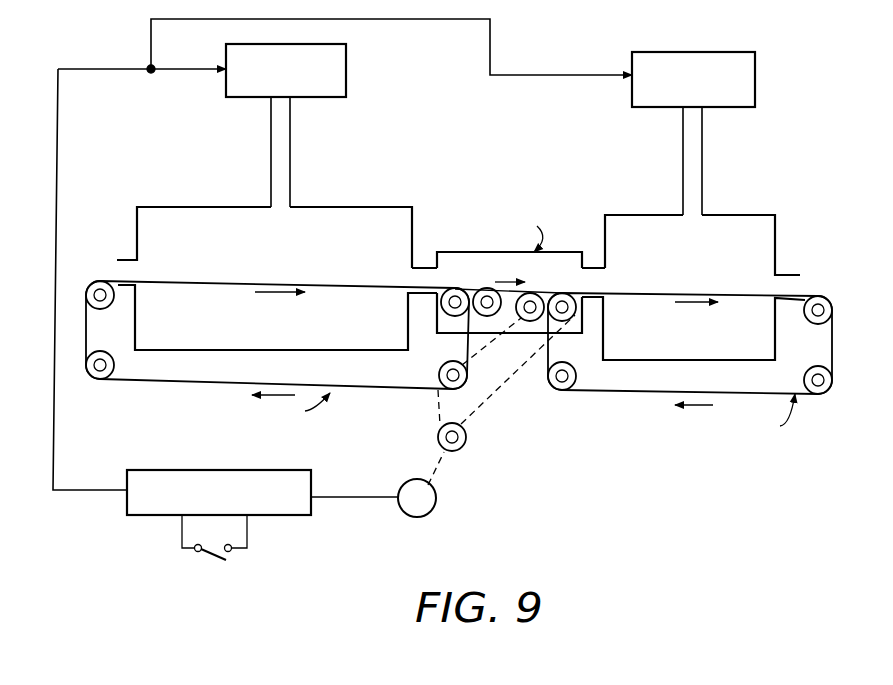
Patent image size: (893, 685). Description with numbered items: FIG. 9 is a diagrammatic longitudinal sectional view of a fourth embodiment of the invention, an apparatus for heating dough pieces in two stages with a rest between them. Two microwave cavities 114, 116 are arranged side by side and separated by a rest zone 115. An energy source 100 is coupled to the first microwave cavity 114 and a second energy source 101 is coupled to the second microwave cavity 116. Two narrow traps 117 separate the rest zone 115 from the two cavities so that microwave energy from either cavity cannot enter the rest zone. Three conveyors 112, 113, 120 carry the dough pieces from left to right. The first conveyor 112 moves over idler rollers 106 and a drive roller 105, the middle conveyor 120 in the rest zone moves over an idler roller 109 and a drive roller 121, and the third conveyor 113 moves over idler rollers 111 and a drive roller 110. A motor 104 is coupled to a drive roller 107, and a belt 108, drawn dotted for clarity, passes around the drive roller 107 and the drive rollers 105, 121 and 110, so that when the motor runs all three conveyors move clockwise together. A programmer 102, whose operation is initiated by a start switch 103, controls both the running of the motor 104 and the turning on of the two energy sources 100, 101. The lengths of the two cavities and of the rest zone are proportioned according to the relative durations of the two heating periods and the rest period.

The energy source 100 is at (347, 88).
The energy source 101 is at (754, 90).
The programmer 102 is at (258, 470).
The start switch 103 is at (213, 556).
The motor 104 is at (400, 509).
The drive roller 105 is at (440, 375).
The idler rollers 106 is at (118, 356).
The drive roller 107 is at (438, 436).
The belt 108 is at (490, 414).
The idler roller 109 is at (486, 291).
The drive roller 110 is at (568, 314).
The idler rollers 111 is at (556, 389).
The conveyor 112 is at (230, 378).
The conveyor 113 is at (726, 394).
The microwave cavity 114 is at (325, 208).
The rest zone 115 is at (437, 250).
The microwave cavity 116 is at (728, 215).
The narrow traps 117 is at (417, 263).
The conveyor 120 is at (488, 326).
The drive roller 121 is at (538, 323).